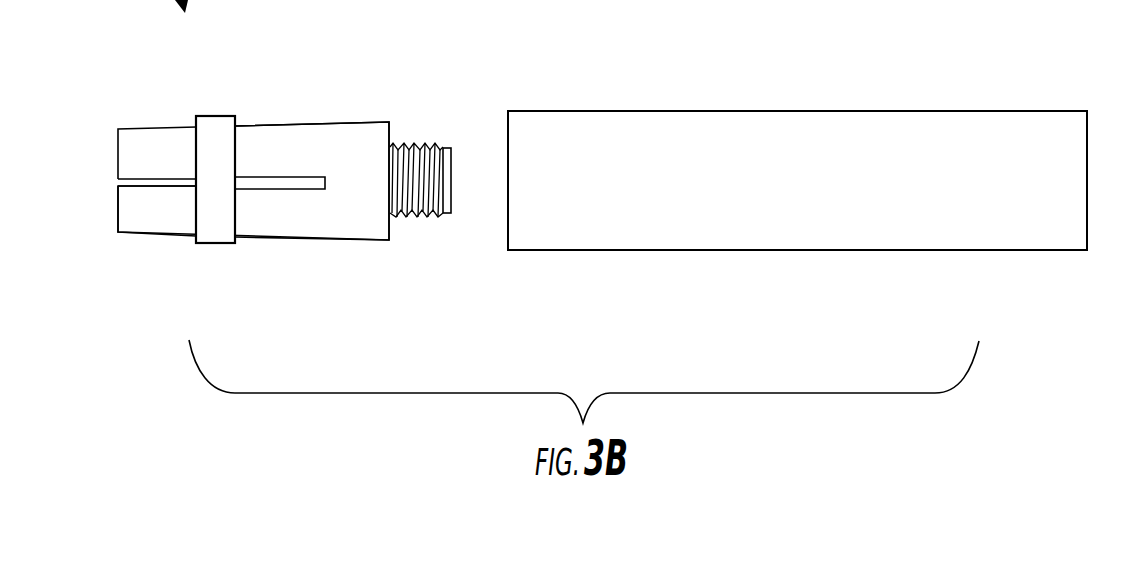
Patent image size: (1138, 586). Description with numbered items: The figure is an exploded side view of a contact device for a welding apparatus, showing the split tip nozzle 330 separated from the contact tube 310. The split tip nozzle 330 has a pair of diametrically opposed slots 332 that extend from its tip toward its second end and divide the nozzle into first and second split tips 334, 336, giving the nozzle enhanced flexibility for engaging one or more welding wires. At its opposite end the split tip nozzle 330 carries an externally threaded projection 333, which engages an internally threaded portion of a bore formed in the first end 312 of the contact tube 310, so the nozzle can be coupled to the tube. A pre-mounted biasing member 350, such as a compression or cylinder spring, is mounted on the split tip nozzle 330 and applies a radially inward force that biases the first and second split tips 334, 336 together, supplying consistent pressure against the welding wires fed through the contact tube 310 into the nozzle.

The contact tube 310 is at (1059, 111).
The first end 312 is at (533, 111).
The split tip nozzle 330 is at (143, 126).
The slots 332 is at (180, 185).
The externally threaded projection 333 is at (440, 218).
The first split tip 334 is at (270, 138).
The second split tip 336 is at (130, 222).
The pre-mounted biasing member 350 is at (215, 243).